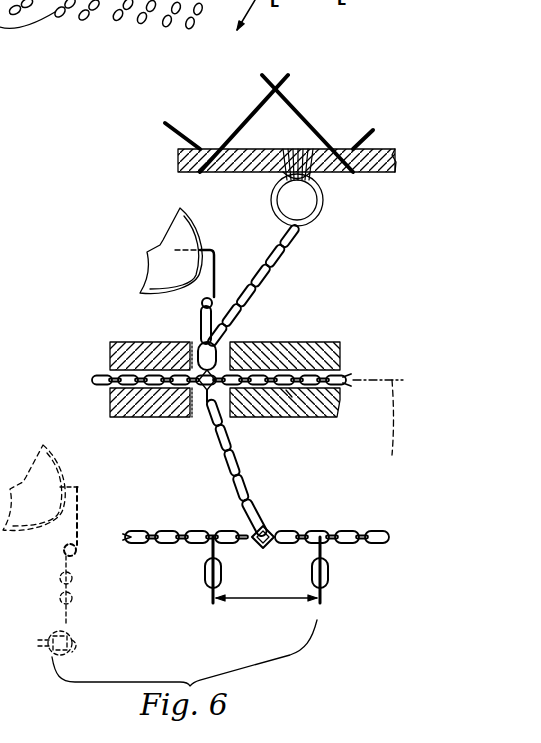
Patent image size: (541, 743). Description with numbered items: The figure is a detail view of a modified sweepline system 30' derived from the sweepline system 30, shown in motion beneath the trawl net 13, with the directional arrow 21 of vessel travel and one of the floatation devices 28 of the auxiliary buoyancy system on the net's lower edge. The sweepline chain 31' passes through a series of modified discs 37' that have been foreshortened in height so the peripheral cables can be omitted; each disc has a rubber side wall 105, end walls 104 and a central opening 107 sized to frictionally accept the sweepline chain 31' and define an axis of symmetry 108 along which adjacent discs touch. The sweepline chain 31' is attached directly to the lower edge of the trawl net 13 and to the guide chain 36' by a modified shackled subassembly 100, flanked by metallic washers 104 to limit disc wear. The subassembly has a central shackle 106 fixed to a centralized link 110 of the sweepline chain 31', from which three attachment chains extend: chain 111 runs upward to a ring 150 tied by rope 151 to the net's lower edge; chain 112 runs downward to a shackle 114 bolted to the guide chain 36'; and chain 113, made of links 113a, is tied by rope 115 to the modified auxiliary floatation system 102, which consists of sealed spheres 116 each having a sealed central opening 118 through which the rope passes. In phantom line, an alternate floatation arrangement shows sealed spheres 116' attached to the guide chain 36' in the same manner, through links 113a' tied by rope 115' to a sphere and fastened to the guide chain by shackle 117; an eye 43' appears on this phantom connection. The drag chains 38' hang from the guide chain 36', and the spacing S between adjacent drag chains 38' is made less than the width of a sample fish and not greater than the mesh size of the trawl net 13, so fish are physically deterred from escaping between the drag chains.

The trawl net 13 is at (293, 100).
The directional arrow 21 is at (266, 149).
The floatation devices 28 is at (380, 148).
The rope 151 is at (300, 148).
The ring 150 is at (326, 206).
The shackled subassemblies 100 is at (293, 285).
The attachment chain 111 is at (263, 295).
The sweepline system 30 is at (131, 404).
The modified auxiliary floatation system 102 is at (131, 419).
The sealed spheres 116 is at (163, 245).
The sealed central opening 118 is at (165, 243).
The rope 115 is at (224, 260).
The links 113a is at (162, 309).
The attachment chain 113 is at (200, 340).
The sealed spheres 116' is at (34, 472).
The rope 115' is at (102, 516).
The eye (alternate position) 43' is at (43, 562).
The links 113a' is at (106, 590).
The shackle 117 is at (68, 617).
The guide chain 36' is at (25, 625).
The modified discs 37' is at (225, 365).
The end walls 104 is at (333, 342).
The side wall 105 is at (322, 418).
The central opening 107 is at (290, 395).
The centralized link 110 is at (172, 418).
The sweepline chain 31' is at (221, 360).
The central shackle 106 is at (205, 417).
The axis of symmetry 108 is at (377, 424).
The attachment chain 112 is at (255, 487).
The shackle 114 is at (258, 510).
The sweepline system 30' is at (266, 514).
The drag chains 38' is at (297, 570).
The spacing S is at (266, 604).